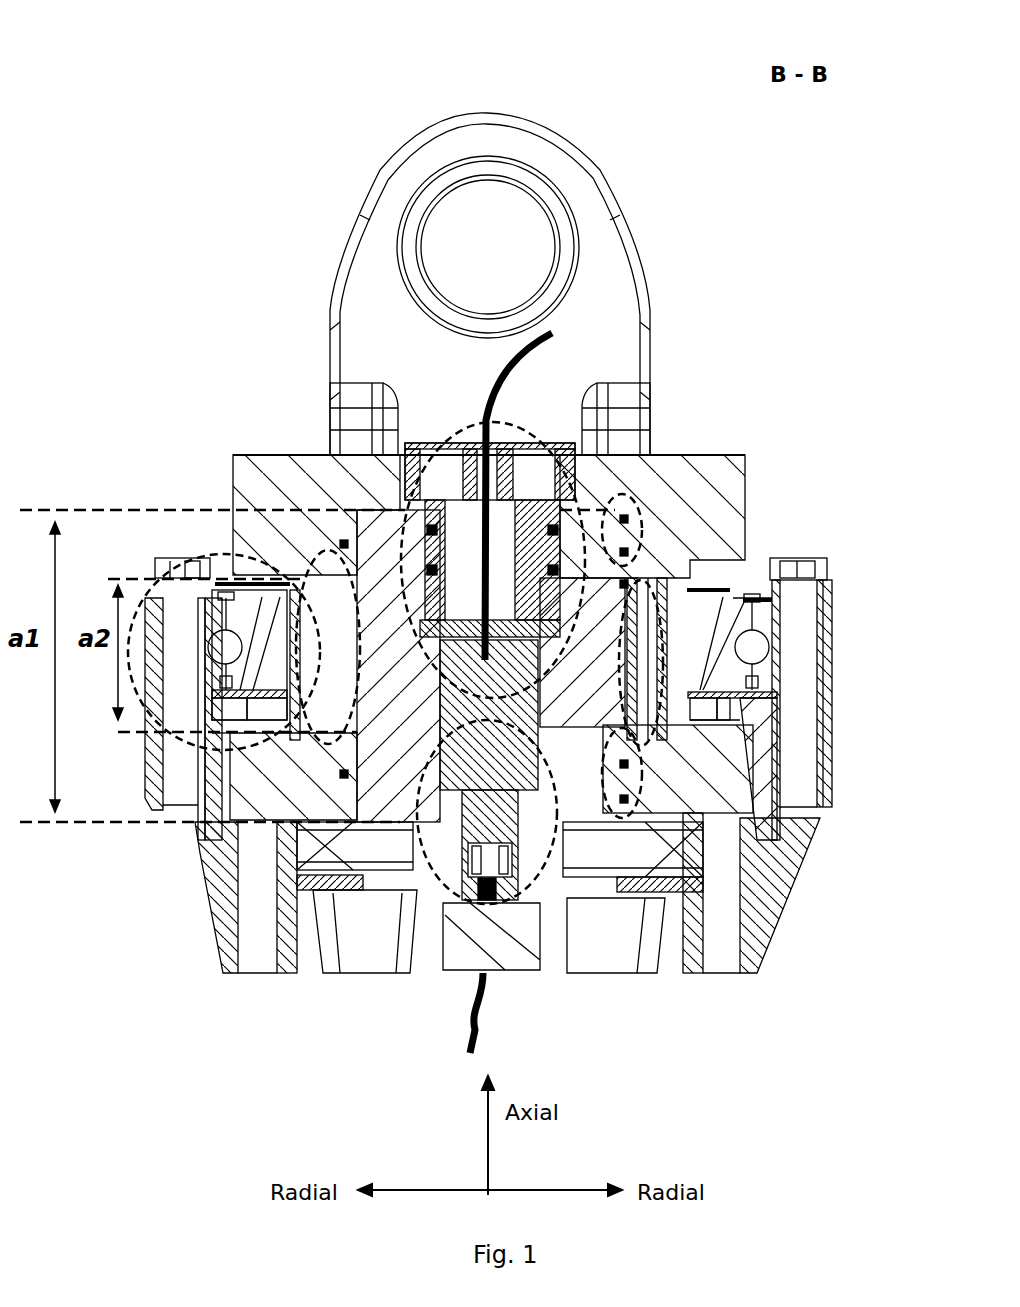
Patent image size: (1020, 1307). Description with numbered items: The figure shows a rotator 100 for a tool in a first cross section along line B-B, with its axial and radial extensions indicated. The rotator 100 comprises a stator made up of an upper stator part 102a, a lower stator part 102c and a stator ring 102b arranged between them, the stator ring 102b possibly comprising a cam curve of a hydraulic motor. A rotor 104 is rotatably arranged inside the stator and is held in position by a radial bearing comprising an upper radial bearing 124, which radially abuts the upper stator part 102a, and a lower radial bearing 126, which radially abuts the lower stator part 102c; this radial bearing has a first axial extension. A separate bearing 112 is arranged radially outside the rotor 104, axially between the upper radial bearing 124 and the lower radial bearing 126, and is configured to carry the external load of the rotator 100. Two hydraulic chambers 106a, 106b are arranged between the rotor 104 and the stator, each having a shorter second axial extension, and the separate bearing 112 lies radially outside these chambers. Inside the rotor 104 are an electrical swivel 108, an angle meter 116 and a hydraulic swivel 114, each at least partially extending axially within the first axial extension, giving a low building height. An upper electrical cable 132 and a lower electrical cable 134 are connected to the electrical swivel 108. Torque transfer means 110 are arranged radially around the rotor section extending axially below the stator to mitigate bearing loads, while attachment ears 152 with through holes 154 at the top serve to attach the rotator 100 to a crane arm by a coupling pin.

The rotator 100 is at (152, 82).
The upper stator part 102a is at (247, 500).
The stator ring 102b is at (680, 630).
The lower stator part 102c is at (723, 787).
The rotor 104 is at (405, 768).
The hydraulic chamber 106a is at (657, 617).
The hydraulic chamber 106b is at (323, 568).
The electrical swivel 108 is at (530, 893).
The torque transfer means 110 is at (663, 857).
The separate bearing 112 is at (207, 552).
The hydraulic swivel 114 is at (580, 487).
The angle meter 116 is at (420, 697).
The upper radial bearing 124 is at (643, 532).
The lower radial bearing 126 is at (632, 795).
The upper electrical cable 132 is at (483, 422).
The lower electrical cable 134 is at (463, 1037).
The attachment ears 152 is at (377, 258).
The through holes 154 is at (518, 275).